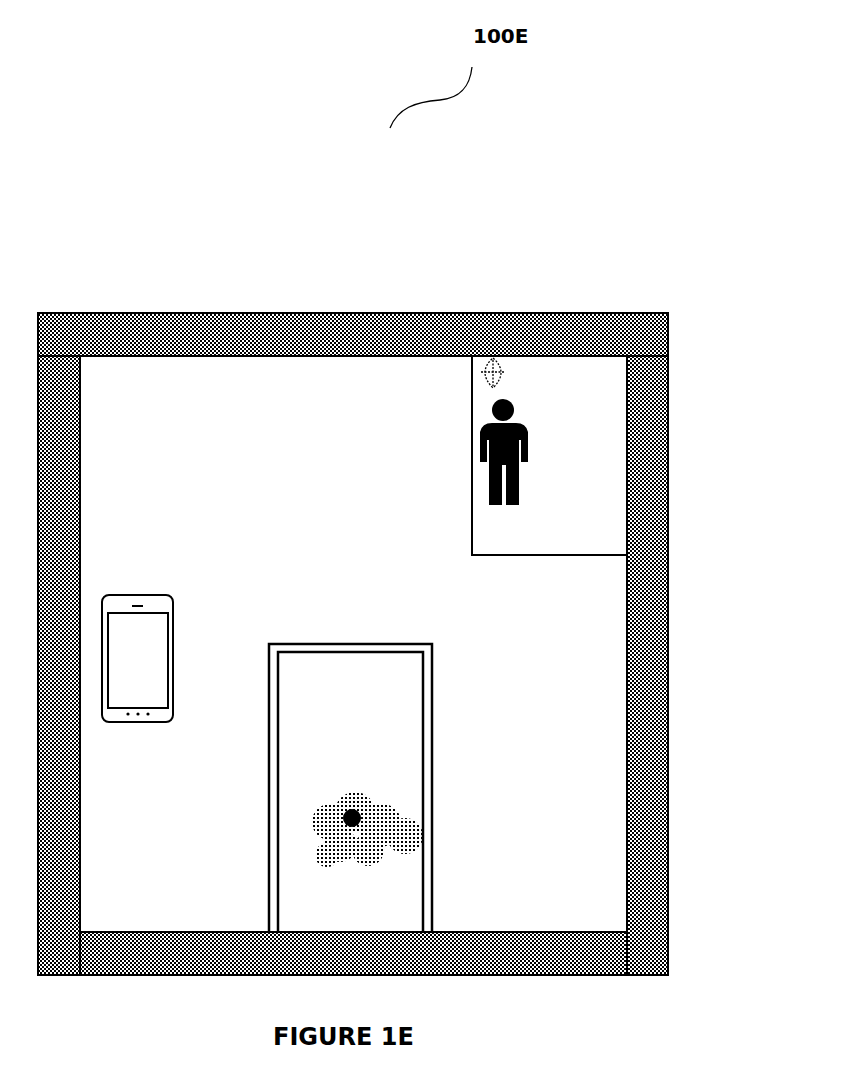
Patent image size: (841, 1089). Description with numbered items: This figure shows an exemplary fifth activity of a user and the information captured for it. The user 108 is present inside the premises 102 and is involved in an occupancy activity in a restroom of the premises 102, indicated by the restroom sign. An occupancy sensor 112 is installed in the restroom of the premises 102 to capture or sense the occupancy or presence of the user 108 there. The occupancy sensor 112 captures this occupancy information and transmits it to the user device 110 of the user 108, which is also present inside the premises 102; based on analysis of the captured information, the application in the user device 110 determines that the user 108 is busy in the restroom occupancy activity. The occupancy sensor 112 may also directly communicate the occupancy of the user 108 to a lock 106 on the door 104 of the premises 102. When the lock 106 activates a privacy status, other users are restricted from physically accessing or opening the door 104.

The premises 102 is at (628, 313).
The door 104 is at (422, 727).
The lock 106 is at (398, 805).
The user 108 is at (523, 426).
The user device 110 is at (157, 680).
The occupancy sensor 112 is at (478, 367).